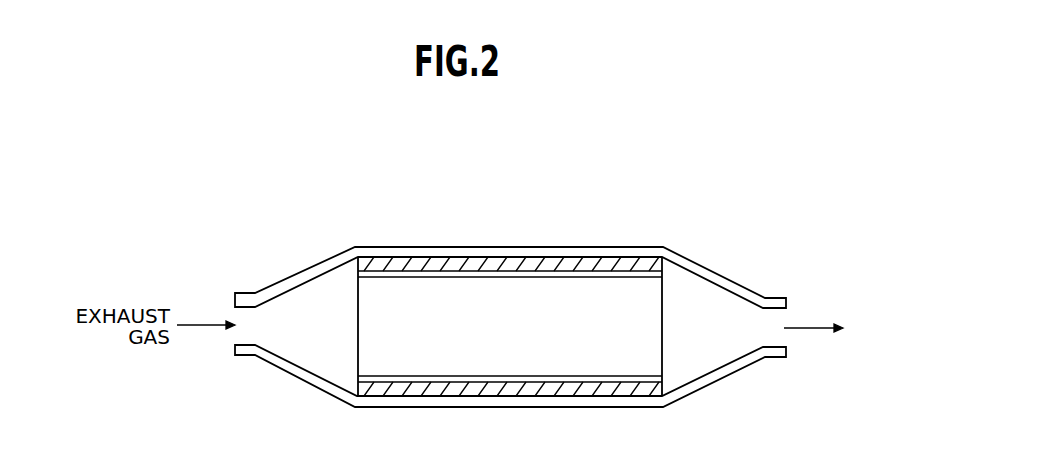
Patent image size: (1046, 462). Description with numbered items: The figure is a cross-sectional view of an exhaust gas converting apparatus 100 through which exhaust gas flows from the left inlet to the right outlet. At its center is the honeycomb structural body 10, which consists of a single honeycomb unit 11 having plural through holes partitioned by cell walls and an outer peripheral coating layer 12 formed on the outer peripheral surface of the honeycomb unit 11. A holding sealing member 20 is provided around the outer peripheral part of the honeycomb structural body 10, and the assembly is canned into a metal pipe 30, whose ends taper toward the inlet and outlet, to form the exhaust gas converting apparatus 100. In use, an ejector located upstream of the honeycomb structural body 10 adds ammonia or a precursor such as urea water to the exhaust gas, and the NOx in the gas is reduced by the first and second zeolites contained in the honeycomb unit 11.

The exhaust gas converting apparatus 100 is at (707, 169).
The honeycomb structural body 10 is at (335, 176).
The honeycomb unit 11 is at (378, 295).
The outer peripheral coating layer 12 is at (422, 275).
The holding sealing member 20 is at (449, 262).
The metal pipe 30 is at (518, 249).